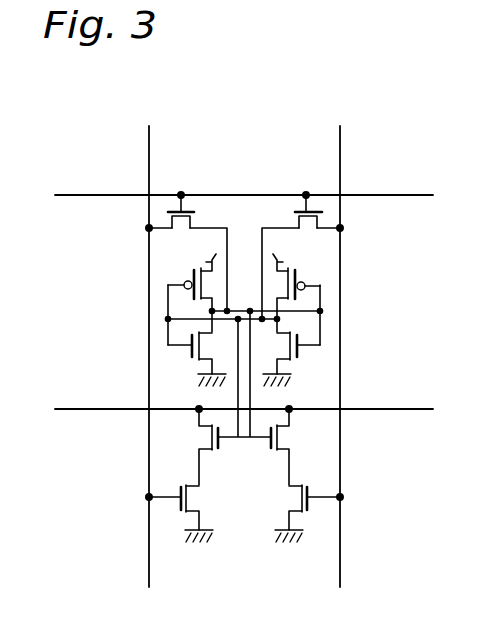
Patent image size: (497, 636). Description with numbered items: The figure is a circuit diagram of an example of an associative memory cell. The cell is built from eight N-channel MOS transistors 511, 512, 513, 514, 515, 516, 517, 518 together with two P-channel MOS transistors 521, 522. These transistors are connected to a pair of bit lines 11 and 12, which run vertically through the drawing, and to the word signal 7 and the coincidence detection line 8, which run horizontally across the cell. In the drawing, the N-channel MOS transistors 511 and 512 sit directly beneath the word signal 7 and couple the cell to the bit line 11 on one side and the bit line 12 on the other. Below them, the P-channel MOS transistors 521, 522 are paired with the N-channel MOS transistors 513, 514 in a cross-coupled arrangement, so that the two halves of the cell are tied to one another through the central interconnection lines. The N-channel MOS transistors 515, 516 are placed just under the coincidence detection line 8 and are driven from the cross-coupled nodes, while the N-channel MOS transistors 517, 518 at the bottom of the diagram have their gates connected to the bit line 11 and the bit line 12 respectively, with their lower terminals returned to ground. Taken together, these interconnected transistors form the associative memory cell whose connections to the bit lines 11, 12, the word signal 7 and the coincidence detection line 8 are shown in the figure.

The bit line 11 is at (179, 347).
The bit line 12 is at (343, 137).
The word signal 7 is at (410, 197).
The coincidence detection line 8 is at (410, 410).
The N-channel MOS transistor 511 is at (144, 253).
The N-channel MOS transistor 512 is at (338, 257).
The P-channel MOS transistor 521 is at (131, 290).
The P-channel MOS transistor 522 is at (350, 293).
The N-channel MOS transistor 513 is at (144, 359).
The N-channel MOS transistor 514 is at (340, 363).
The N-channel MOS transistor 515 is at (140, 447).
The N-channel MOS transistor 516 is at (343, 447).
The N-channel MOS transistor 517 is at (135, 513).
The N-channel MOS transistor 518 is at (345, 520).